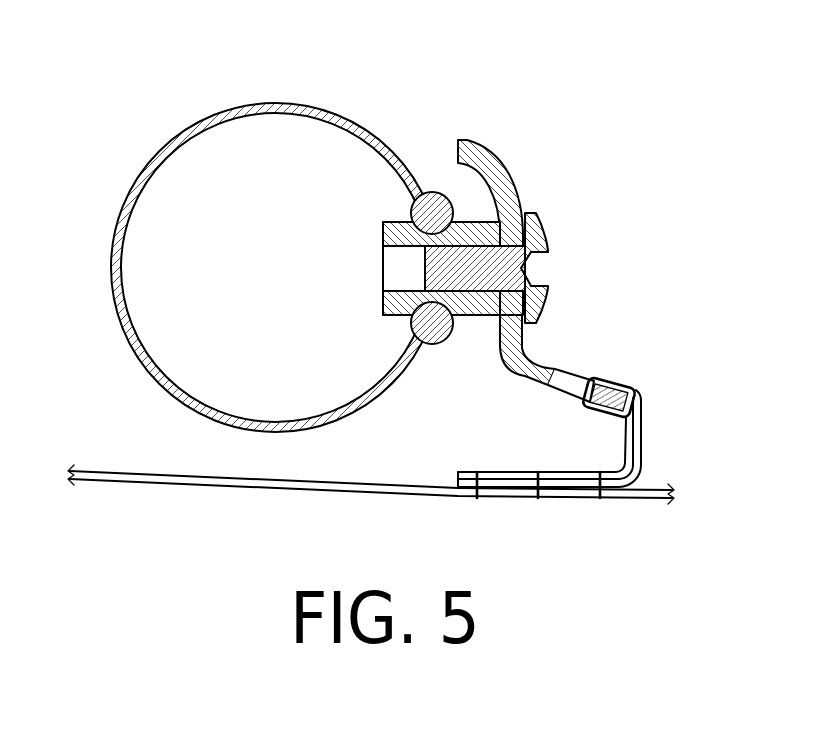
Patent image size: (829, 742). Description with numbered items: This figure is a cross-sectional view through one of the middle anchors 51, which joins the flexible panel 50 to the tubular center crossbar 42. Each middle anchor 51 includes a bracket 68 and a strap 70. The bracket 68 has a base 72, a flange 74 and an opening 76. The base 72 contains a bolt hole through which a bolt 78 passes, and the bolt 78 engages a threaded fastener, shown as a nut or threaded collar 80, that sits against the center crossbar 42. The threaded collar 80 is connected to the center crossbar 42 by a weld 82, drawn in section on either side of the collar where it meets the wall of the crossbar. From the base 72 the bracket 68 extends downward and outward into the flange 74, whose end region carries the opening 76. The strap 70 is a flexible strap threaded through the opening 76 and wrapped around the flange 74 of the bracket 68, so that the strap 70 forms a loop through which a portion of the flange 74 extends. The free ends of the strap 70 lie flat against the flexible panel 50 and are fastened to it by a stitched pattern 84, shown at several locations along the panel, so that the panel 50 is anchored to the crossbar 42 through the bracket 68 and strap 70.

The center crossbar 42 is at (280, 103).
The flexible panel 50 is at (240, 495).
The middle anchor 51 is at (496, 107).
The bracket 68 is at (524, 150).
The strap 70 is at (643, 437).
The base 72 is at (521, 178).
The flange 74 is at (521, 371).
The opening 76 is at (568, 385).
The bolt 78 is at (547, 301).
The threaded collar 80 is at (383, 230).
The weld 82 is at (432, 192).
The stitched pattern 84 is at (477, 489).